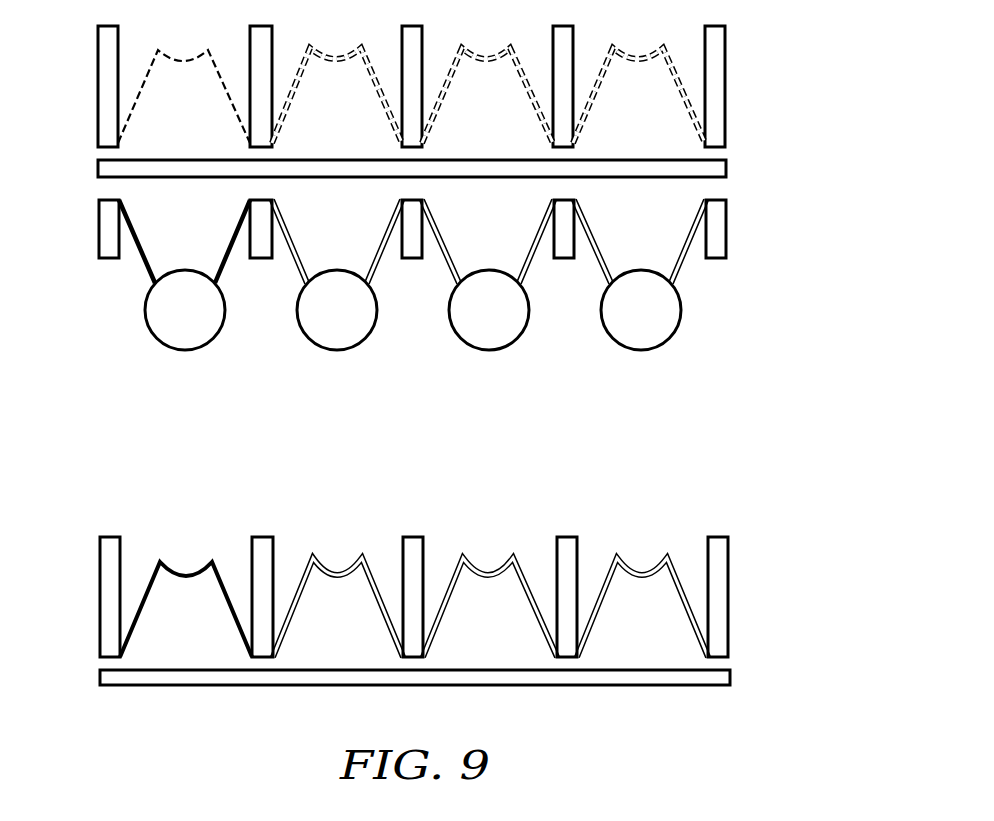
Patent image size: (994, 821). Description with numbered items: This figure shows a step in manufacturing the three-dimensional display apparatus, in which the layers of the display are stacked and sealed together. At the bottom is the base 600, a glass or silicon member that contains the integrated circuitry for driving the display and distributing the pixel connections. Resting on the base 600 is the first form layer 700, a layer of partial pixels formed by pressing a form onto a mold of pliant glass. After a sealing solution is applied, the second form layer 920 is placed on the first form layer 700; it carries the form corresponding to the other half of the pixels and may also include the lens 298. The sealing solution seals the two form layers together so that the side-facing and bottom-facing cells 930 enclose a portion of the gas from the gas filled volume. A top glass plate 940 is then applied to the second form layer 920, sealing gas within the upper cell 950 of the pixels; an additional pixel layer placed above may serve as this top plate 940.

The lens 298 is at (665, 323).
The base 600 is at (590, 685).
The first form layer 700 is at (728, 593).
The second form layer 920 is at (107, 262).
The side-facing and bottom-facing cells 930 is at (590, 257).
The top glass plate 940 is at (98, 167).
The upper cell 950 is at (692, 210).